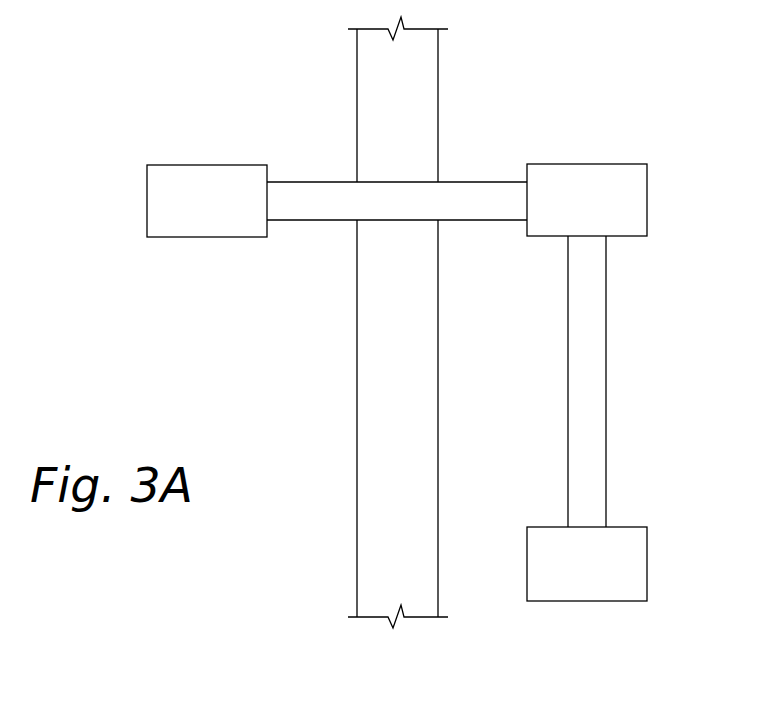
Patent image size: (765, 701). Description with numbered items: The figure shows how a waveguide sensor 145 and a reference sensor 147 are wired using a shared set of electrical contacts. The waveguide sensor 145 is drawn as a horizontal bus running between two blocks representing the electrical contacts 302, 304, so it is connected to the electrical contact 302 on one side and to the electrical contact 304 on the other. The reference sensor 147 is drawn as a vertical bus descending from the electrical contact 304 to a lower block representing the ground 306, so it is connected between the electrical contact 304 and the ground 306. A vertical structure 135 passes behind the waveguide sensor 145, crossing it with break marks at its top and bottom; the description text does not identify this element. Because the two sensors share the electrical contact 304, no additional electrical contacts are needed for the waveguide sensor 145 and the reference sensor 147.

The first bus 135 is at (356, 376).
The waveguide sensor 145 is at (479, 182).
The reference sensor 147 is at (607, 379).
The electrical contact 302 is at (147, 200).
The electrical contact 304 is at (648, 197).
The ground 306 is at (648, 562).